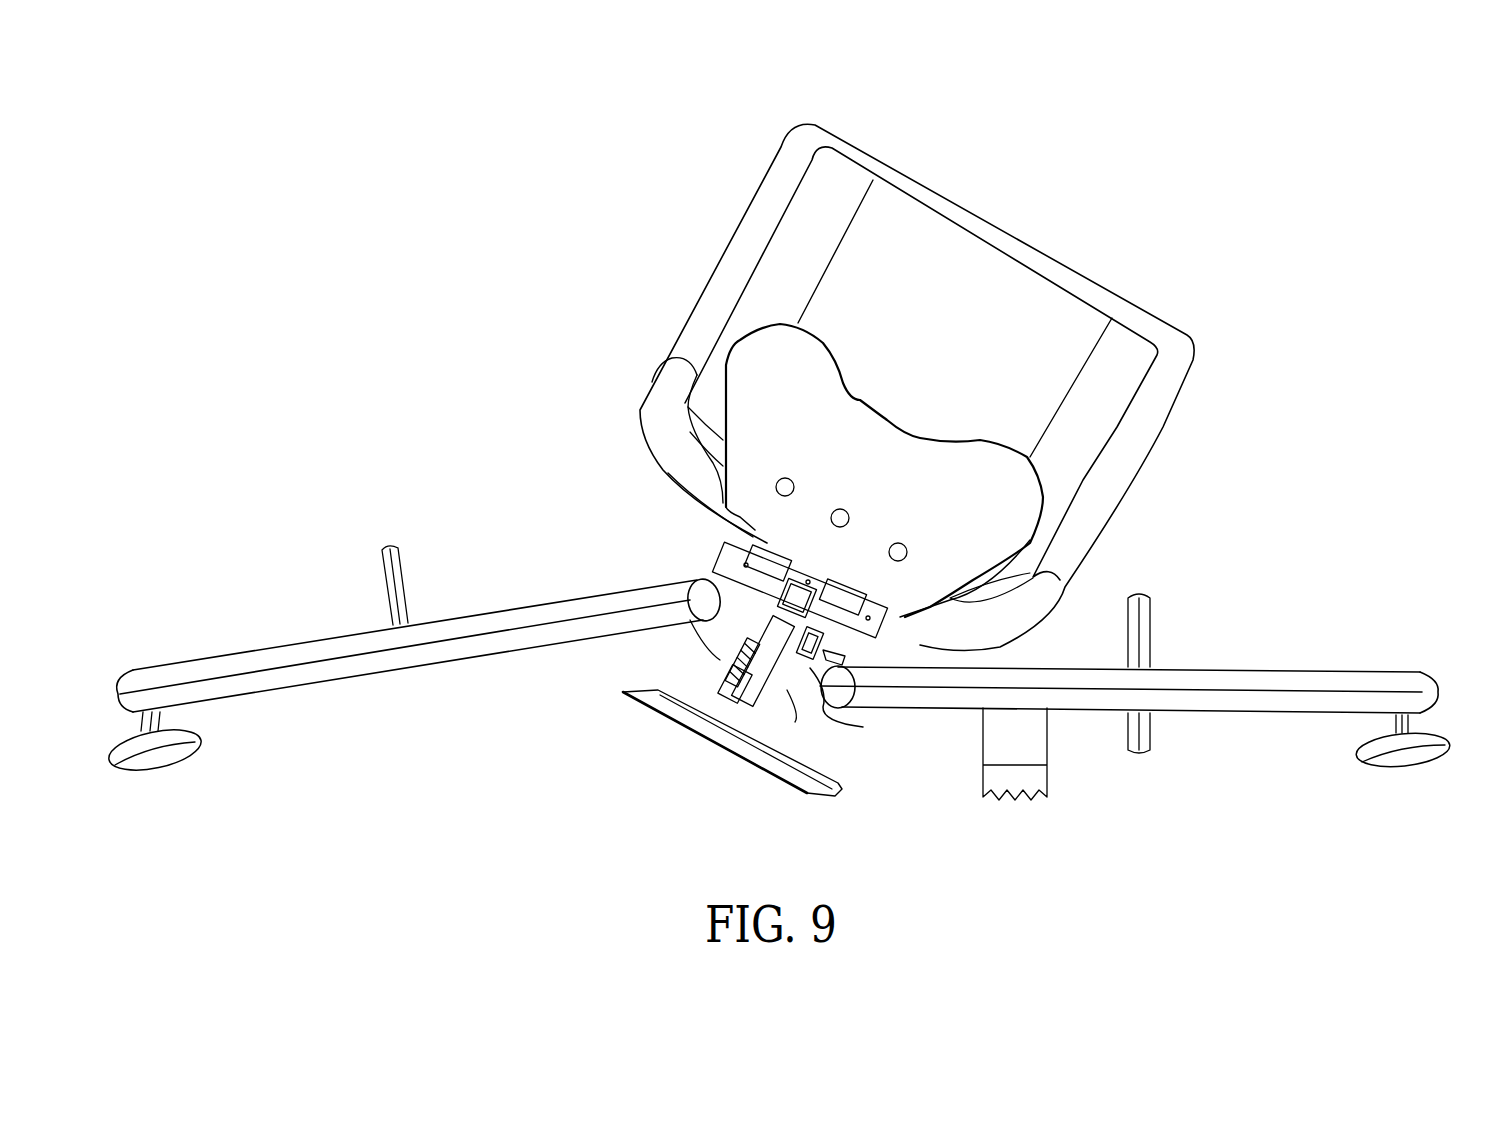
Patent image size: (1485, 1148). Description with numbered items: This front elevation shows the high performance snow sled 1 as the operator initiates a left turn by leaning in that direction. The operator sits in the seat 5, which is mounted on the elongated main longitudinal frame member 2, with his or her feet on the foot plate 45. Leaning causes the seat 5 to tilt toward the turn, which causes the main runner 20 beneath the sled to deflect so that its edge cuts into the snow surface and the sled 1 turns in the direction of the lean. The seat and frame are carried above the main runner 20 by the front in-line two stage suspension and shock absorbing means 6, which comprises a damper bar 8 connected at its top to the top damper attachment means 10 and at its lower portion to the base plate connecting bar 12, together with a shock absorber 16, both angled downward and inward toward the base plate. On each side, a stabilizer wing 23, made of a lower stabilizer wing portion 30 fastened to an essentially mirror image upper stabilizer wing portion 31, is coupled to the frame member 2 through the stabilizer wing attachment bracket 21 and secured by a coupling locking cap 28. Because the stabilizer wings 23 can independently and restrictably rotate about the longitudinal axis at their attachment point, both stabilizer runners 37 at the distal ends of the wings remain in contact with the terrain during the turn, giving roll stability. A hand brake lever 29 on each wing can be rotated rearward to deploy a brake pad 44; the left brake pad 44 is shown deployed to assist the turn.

The high performance snow sled 1 is at (1022, 130).
The main longitudinal frame member 2 is at (803, 598).
The seat 5 is at (1032, 298).
The front in-line two stage suspension and shock absorbing means 6 is at (706, 660).
The damper bar 8 is at (770, 640).
The top damper attachment means 10 is at (750, 590).
The base plate connecting bar 12 is at (652, 700).
The shock absorber 16 is at (785, 690).
The main runner 20 is at (760, 745).
The stabilizer wing attachment bracket 21 is at (708, 590).
The stabilizer wing 23 is at (778, 683).
The coupling locking cap 28 is at (838, 652).
The hand brake lever 29 is at (382, 567).
The lower stabilizer wing portion 30 is at (523, 645).
The upper stabilizer wing portion 31 is at (458, 630).
The stabilizer runner 37 is at (190, 742).
The brake pad 44 is at (988, 735).
The foot plate 45 is at (1005, 505).